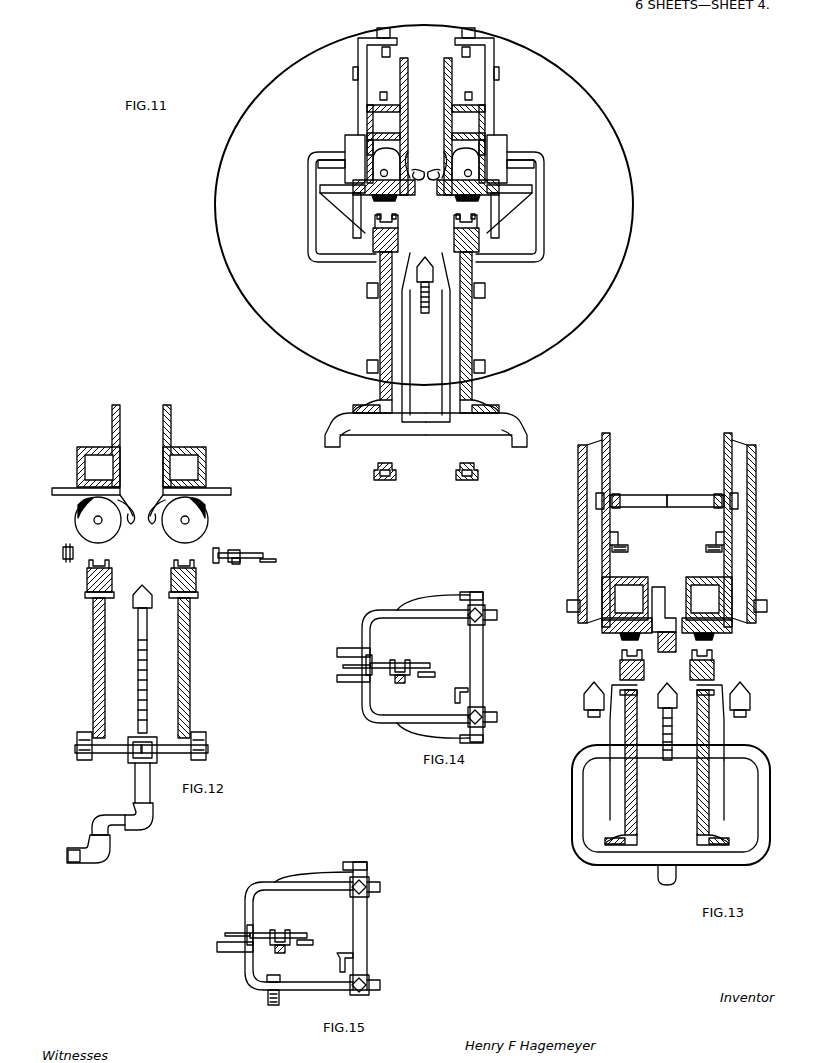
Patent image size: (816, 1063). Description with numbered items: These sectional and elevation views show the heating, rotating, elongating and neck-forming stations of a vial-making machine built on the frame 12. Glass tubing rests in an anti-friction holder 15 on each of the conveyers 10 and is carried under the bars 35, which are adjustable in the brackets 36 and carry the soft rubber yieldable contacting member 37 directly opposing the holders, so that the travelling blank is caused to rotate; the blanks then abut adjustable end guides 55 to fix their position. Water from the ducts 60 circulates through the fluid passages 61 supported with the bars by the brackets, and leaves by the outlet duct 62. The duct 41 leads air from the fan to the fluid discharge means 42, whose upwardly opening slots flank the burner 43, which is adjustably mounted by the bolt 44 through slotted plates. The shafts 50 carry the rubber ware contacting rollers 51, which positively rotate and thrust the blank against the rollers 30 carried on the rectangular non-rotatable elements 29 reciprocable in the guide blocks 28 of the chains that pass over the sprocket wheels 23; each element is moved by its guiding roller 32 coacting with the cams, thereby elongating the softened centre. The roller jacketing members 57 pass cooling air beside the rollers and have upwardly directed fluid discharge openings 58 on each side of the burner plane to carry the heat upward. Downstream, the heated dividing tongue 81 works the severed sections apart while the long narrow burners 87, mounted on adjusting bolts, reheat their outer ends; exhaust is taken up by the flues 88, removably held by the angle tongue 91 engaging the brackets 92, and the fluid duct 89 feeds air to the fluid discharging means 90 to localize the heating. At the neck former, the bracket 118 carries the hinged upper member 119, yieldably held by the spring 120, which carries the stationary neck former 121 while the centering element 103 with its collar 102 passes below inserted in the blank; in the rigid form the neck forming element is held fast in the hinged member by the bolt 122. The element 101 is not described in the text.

In FIG. 11, the conveyer 10 is at (383, 240).
In FIG. 12, the conveyer 10 is at (87, 580).
In FIG. 13, the conveyer 10 is at (632, 668).
In FIG. 11, the frame 12 is at (500, 407).
In FIG. 12, the frame 12 is at (93, 710).
In FIG. 13, the frame 12 is at (625, 795).
In FIG. 11, the anti-friction holder 15 is at (376, 226).
In FIG. 12, the anti-friction holder 15 is at (107, 572).
In FIG. 13, the anti-friction holder 15 is at (622, 658).
In FIG. 12, the sprocket wheel 23 is at (250, 553).
In FIG. 12, the guide block 28 is at (240, 560).
In FIG. 14, the guide block 28 is at (405, 680).
In FIG. 15, the guide block 28 is at (287, 950).
In FIG. 14, the rectangular non-rotatable element 29 is at (412, 663).
In FIG. 15, the rectangular non-rotatable element 29 is at (292, 933).
In FIG. 12, the roller 30 is at (70, 562).
In FIG. 12, the guiding roller 32 is at (277, 560).
In FIG. 14, the guiding roller 32 is at (436, 674).
In FIG. 15, the guiding roller 32 is at (314, 942).
In FIG. 11, the bar 35 is at (345, 165).
In FIG. 11, the bracket 36 is at (216, 190).
In FIG. 11, the yieldable contacting member 37 is at (317, 235).
In FIG. 13, the yieldable contacting member 37 is at (620, 648).
In FIG. 11, the duct 41 is at (330, 427).
In FIG. 11, the fluid discharge means 42 is at (378, 290).
In FIG. 11, the burner 43 is at (445, 290).
In FIG. 12, the burner 43 is at (136, 592).
In FIG. 11, the bolt 44 is at (428, 315).
In FIG. 12, the bolt 44 is at (148, 650).
In FIG. 13, the bolt 44 is at (666, 760).
In FIG. 11, the shaft 50 is at (383, 174).
In FIG. 12, the shaft 50 is at (96, 520).
In FIG. 12, the ware contacting roller 51 is at (75, 515).
In FIG. 11, the adjustable end guide 55 is at (355, 198).
In FIG. 12, the roller jacketing member 57 is at (72, 488).
In FIG. 11, the fluid discharge opening 58 is at (435, 170).
In FIG. 12, the fluid discharge opening 58 is at (152, 510).
In FIG. 11, the duct 60 is at (380, 97).
In FIG. 11, the fluid passage 61 is at (380, 122).
In FIG. 12, the fluid passage 61 is at (97, 460).
In FIG. 13, the fluid passage 61 is at (625, 605).
In FIG. 13, the outlet duct 62 is at (570, 613).
In FIG. 13, the dividing member or tongue 81 is at (662, 650).
In FIG. 13, the long narrow burner 87 is at (584, 698).
In FIG. 13, the flue 88 is at (587, 532).
In FIG. 13, the fluid duct 89 is at (575, 835).
In FIG. 13, the fluid discharging means 90 is at (612, 690).
In FIG. 13, the angle tongue 91 is at (705, 538).
In FIG. 13, the bracket 92 is at (705, 548).
In FIG. 14, the bar 101 is at (392, 660).
In FIG. 15, the bar 101 is at (268, 932).
In FIG. 14, the collar 102 is at (368, 660).
In FIG. 15, the collar 102 is at (248, 928).
In FIG. 14, the centering element 103 is at (343, 666).
In FIG. 15, the centering element 103 is at (240, 934).
In FIG. 14, the bracket 118 is at (485, 660).
In FIG. 15, the bracket 118 is at (368, 913).
In FIG. 14, the upper member 119 is at (368, 615).
In FIG. 15, the upper member 119 is at (250, 888).
In FIG. 14, the spring 120 is at (410, 598).
In FIG. 15, the spring 120 is at (307, 872).
In FIG. 14, the neck former 121 is at (337, 652).
In FIG. 15, the neck former 121 is at (228, 950).
In FIG. 15, the bolt 122 is at (275, 1005).